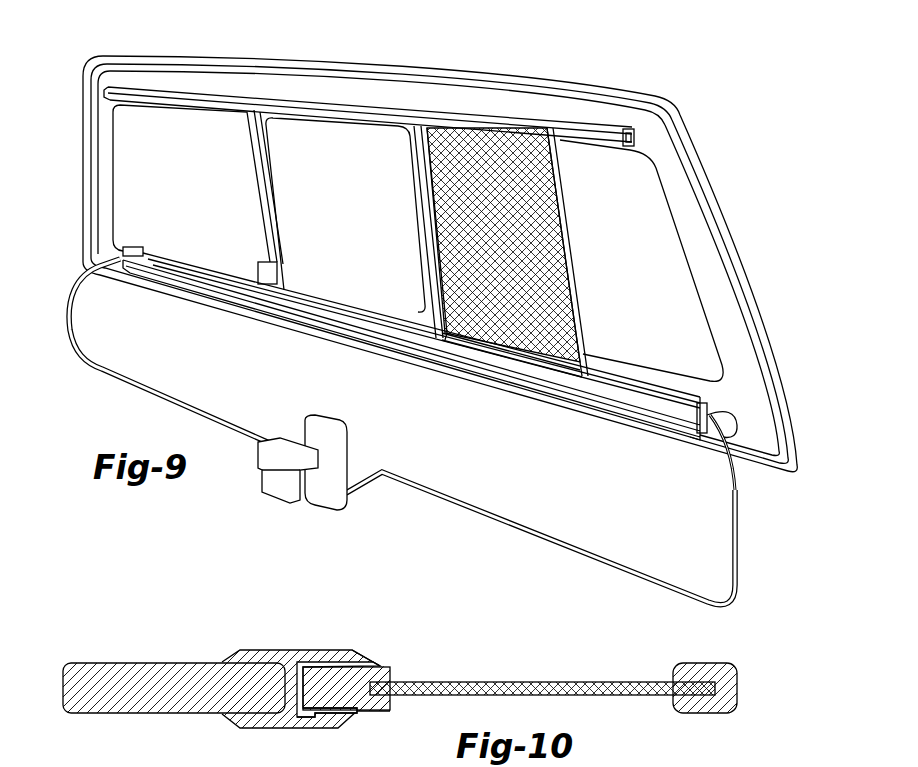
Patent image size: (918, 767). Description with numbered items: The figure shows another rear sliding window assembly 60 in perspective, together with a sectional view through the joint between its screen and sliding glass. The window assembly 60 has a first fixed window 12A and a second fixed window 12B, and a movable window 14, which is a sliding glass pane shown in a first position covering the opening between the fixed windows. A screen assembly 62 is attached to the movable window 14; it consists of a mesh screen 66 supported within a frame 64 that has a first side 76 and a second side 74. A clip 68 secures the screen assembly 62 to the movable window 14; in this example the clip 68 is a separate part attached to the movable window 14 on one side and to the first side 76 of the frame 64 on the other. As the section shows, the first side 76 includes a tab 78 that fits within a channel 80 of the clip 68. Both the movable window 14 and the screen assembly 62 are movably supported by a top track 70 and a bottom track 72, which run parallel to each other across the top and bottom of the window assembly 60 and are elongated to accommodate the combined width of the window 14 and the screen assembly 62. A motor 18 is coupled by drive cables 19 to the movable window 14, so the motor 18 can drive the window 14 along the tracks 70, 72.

In FIG. 9, the first fixed window 12A is at (194, 158).
In FIG. 9, the second fixed window 12B is at (657, 297).
In FIG. 9, the movable window 14 is at (323, 153).
In FIG. 10, the movable window 14 is at (130, 662).
In FIG. 9, the motor 18 is at (292, 481).
In FIG. 9, the drive cables 19 is at (104, 366).
In FIG. 9, the window assembly 60 is at (753, 190).
In FIG. 9, the screen assembly 62 is at (473, 243).
In FIG. 10, the screen assembly 62 is at (561, 670).
In FIG. 10, the frame 64 is at (520, 670).
In FIG. 9, the mesh screen 66 is at (474, 167).
In FIG. 10, the mesh screen 66 is at (657, 700).
In FIG. 9, the clip 68 is at (430, 263).
In FIG. 10, the clip 68 is at (273, 650).
In FIG. 9, the top track 70 is at (542, 132).
In FIG. 9, the bottom track 72 is at (637, 405).
In FIG. 9, the second side 74 is at (569, 336).
In FIG. 10, the second side 74 is at (662, 678).
In FIG. 9, the first side 76 is at (416, 331).
In FIG. 10, the first side 76 is at (403, 669).
In FIG. 10, the tab 78 is at (314, 722).
In FIG. 10, the channel 80 is at (383, 658).